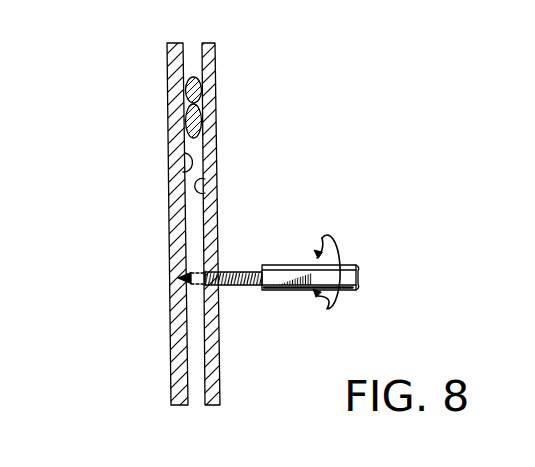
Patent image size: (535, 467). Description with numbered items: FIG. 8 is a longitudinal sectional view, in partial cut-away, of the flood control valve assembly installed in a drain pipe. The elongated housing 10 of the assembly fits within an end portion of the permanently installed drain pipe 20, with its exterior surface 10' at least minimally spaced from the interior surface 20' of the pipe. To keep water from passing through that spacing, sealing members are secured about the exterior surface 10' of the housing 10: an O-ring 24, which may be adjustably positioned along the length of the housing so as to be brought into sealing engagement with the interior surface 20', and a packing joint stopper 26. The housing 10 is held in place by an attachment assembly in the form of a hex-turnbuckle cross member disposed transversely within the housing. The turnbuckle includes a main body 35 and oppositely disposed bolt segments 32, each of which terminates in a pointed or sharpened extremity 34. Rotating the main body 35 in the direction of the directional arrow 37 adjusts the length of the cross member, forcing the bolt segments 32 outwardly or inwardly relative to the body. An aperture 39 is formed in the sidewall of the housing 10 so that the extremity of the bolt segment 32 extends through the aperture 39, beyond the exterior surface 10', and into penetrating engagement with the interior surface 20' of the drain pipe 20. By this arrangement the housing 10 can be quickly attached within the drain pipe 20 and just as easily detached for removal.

The housing 10 is at (270, 224).
The exterior surface of the housing 10' is at (235, 191).
The drain pipe 20 is at (114, 224).
The interior surface of the drain pipe 20' is at (158, 146).
The O-ring 24 is at (196, 86).
The packing joint stopper 26 is at (198, 114).
The bolt segment 32 is at (233, 271).
The pointed extremity 34 is at (187, 272).
The main body 35 is at (360, 286).
The directional arrow 37 is at (328, 232).
The aperture 39 is at (216, 284).